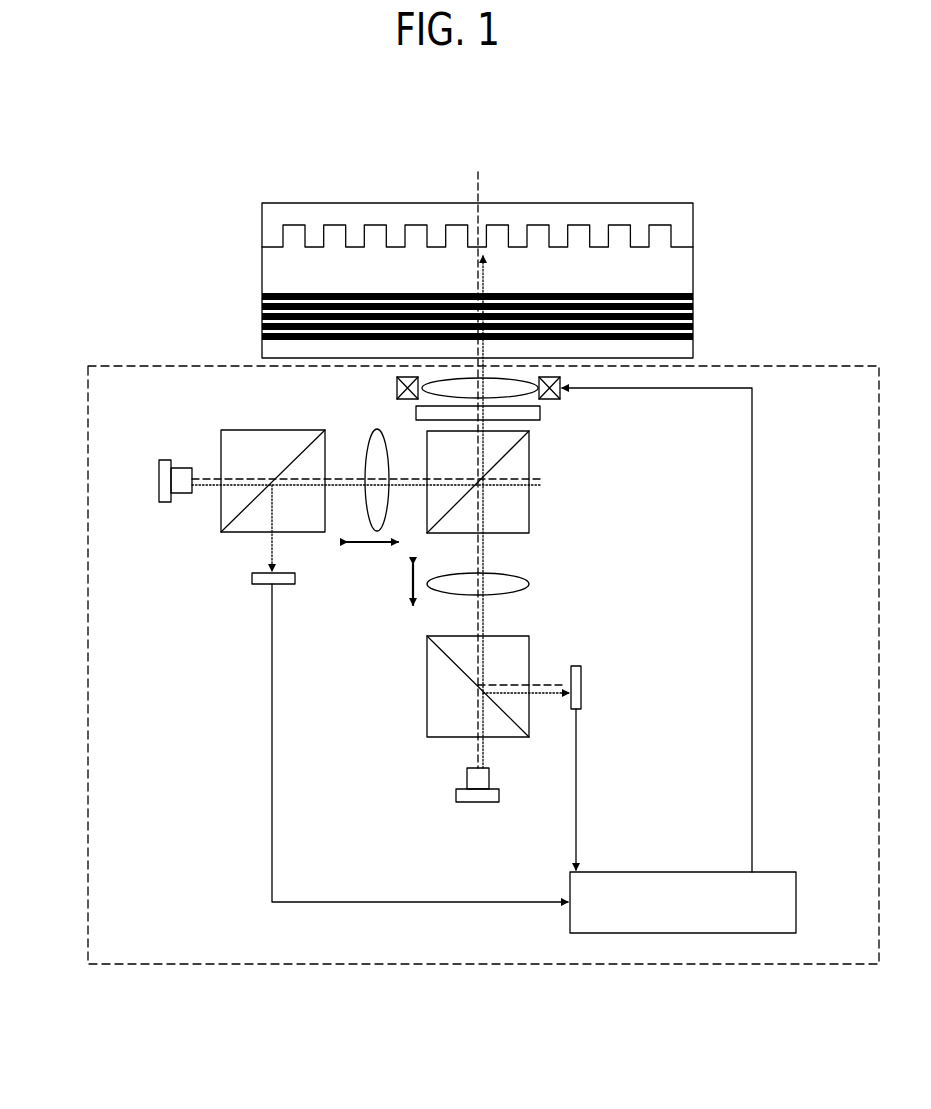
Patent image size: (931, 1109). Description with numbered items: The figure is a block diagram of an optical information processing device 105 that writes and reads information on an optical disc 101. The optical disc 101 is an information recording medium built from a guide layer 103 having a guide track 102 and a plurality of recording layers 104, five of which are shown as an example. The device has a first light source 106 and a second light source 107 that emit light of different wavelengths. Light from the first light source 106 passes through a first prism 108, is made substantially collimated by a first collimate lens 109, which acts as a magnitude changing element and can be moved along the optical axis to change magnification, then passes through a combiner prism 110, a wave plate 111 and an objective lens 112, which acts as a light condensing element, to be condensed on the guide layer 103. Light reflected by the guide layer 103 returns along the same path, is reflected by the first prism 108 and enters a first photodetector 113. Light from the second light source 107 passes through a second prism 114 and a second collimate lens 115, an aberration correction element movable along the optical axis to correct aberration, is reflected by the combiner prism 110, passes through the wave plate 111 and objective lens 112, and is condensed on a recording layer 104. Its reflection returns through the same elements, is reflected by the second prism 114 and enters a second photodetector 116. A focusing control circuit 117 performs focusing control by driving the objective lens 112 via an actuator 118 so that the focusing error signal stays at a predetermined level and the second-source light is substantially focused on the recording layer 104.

The optical disc 101 is at (587, 203).
The guide track 102 is at (332, 225).
The guide layer 103 is at (433, 217).
The recording layers 104 is at (270, 295).
The optical information processing device 105 is at (790, 366).
The first light source 106 is at (455, 793).
The second light source 107 is at (157, 491).
The first prism 108 is at (443, 670).
The first collimate lens 109 is at (505, 584).
The combiner prism 110 is at (513, 500).
The wave plate 111 is at (495, 413).
The objective lens 112 is at (495, 392).
The first photodetector 113 is at (582, 675).
The second prism 114 is at (247, 448).
The second collimate lens 115 is at (377, 442).
The second photodetector 116 is at (252, 577).
The focusing control circuit 117 is at (683, 902).
The actuator 118 is at (562, 395).